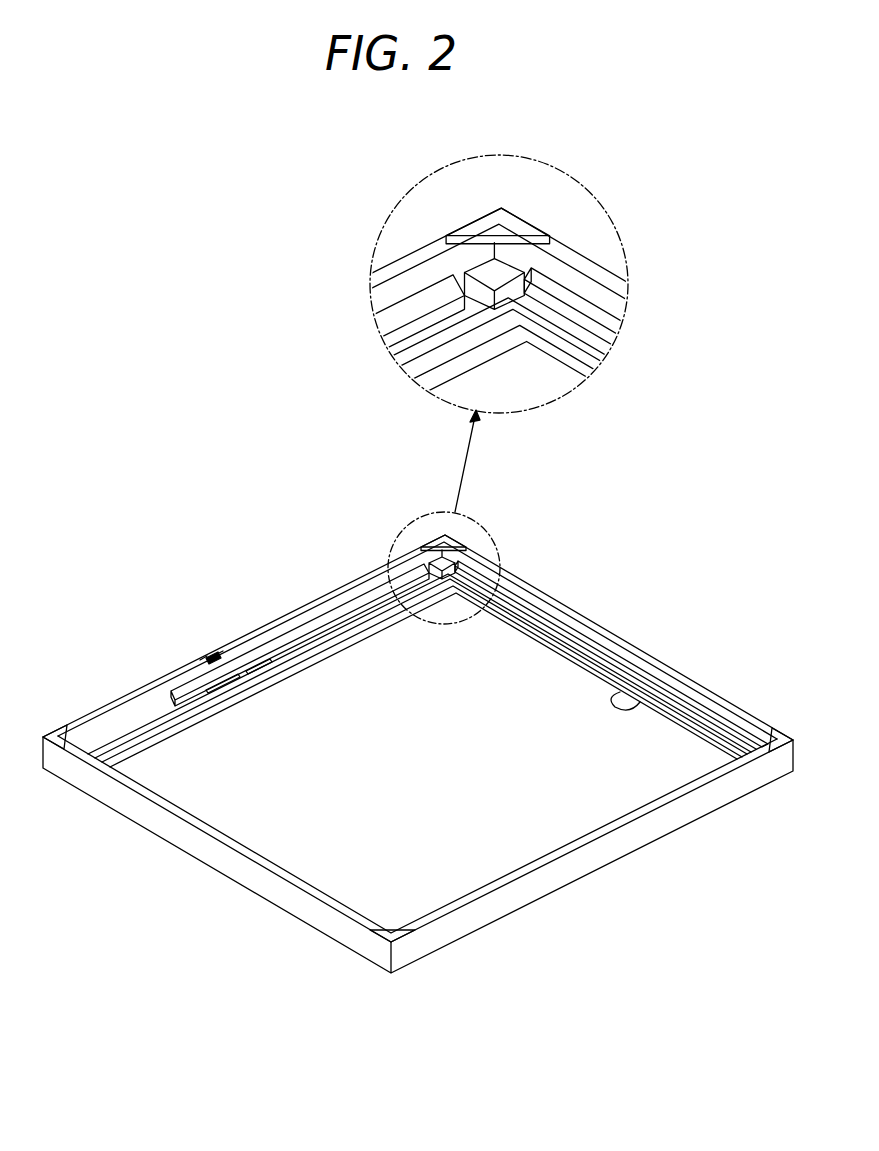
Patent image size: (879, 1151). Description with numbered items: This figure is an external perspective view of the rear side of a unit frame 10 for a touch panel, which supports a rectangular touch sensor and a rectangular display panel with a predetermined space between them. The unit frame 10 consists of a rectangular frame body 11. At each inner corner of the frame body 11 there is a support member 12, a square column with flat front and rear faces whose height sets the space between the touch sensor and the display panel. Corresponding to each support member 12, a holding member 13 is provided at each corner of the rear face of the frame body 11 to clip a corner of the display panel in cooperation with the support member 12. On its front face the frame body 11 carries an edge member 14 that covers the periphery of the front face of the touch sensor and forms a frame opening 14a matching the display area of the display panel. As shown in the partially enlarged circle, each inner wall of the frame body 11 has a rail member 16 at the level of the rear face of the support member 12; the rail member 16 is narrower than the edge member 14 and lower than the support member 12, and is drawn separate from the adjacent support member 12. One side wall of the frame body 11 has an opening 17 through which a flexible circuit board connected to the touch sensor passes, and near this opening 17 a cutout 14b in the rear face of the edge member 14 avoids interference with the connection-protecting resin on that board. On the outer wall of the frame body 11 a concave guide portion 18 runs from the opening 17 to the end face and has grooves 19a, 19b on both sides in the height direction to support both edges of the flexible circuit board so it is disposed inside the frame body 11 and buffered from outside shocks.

The unit frame for touch panel 10 is at (185, 876).
The frame body 11 is at (632, 836).
The support member 12 is at (458, 560).
The holding member 13 is at (492, 222).
The edge member 14 is at (600, 638).
The frame opening 14a is at (640, 702).
The cutout 14b is at (265, 672).
The rail member 16 is at (357, 603).
The opening 17 is at (224, 688).
The guide portion 18 is at (210, 656).
The groove 19a is at (206, 658).
The groove 19b is at (218, 656).